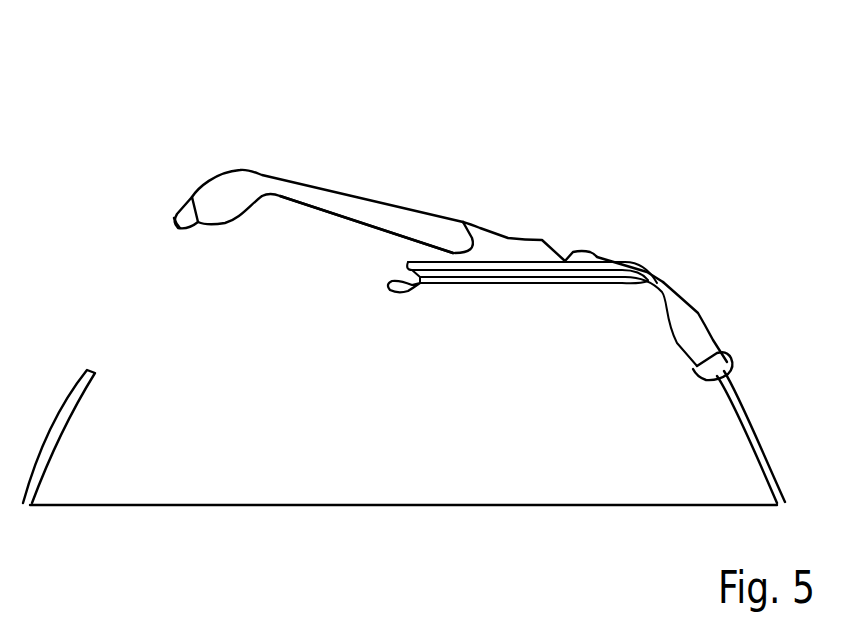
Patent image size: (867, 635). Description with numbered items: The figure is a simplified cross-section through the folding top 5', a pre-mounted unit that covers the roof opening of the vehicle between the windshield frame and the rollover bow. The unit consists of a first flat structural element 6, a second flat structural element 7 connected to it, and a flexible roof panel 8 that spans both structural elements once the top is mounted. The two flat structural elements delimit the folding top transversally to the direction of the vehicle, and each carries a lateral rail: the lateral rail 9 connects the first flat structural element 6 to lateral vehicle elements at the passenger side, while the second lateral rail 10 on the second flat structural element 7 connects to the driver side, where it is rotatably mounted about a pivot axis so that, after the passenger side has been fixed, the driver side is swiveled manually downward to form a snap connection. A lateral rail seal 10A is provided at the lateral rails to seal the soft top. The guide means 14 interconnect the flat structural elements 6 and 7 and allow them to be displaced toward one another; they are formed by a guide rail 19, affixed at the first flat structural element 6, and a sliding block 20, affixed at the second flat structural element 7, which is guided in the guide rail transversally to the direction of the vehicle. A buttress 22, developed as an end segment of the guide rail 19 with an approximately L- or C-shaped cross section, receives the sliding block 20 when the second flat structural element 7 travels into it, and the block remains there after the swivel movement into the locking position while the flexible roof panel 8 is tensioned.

The folding top 5' is at (366, 138).
The first flat structural element 6 is at (663, 282).
The second flat structural element 7 is at (253, 178).
The flexible roof panel 8 is at (508, 238).
The lateral rail 9 is at (698, 313).
The second lateral rail 10 is at (192, 197).
The lateral rail seal 10A is at (174, 218).
The guide means 14 is at (565, 261).
The guide rail 19 is at (548, 277).
The sliding block 20 is at (462, 255).
The buttress 22 is at (413, 290).